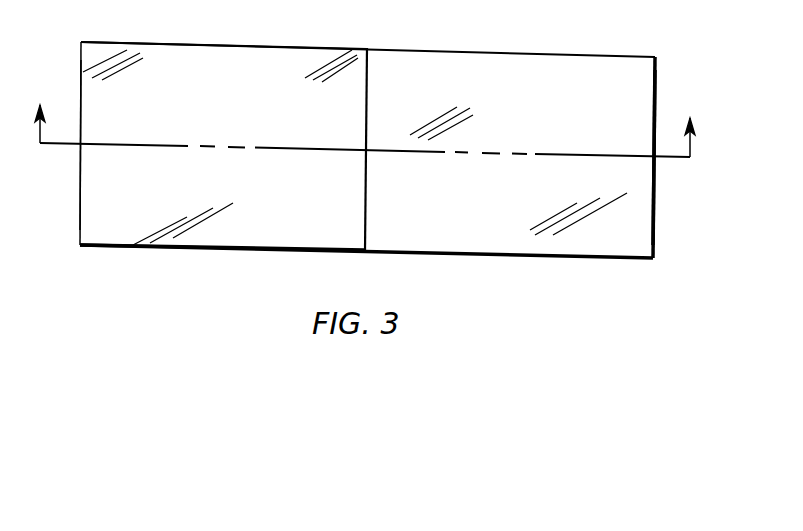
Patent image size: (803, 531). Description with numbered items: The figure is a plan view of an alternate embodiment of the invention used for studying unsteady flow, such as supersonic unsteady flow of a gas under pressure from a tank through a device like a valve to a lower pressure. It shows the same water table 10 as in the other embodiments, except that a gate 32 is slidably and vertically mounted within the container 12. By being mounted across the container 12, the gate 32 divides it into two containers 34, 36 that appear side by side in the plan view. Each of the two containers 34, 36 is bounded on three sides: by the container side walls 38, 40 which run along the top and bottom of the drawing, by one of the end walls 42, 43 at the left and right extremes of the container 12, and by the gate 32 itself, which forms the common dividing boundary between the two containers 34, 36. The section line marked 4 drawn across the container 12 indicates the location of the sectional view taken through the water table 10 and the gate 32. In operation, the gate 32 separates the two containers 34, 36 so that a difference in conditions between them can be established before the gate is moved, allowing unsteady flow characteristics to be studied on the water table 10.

The water table 10 is at (158, 326).
The container 12 is at (607, 54).
The gate 32 is at (367, 80).
The container 34 is at (228, 119).
The container 36 is at (523, 129).
The container side wall 38 is at (213, 265).
The container side wall 40 is at (170, 42).
The end wall 42 is at (80, 223).
The end wall 43 is at (655, 238).
The section line 4- 4 is at (364, 120).